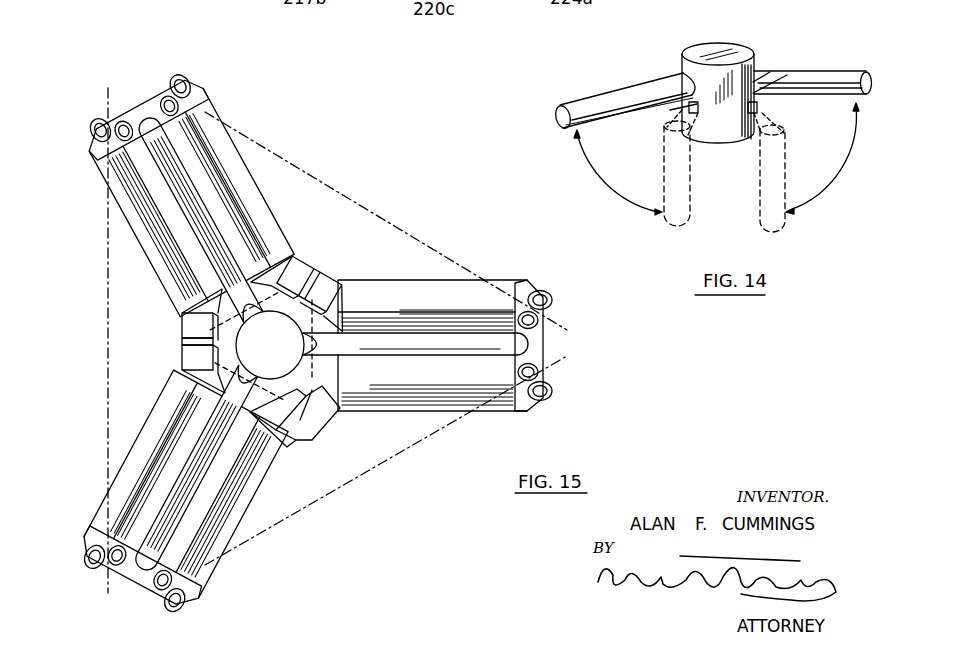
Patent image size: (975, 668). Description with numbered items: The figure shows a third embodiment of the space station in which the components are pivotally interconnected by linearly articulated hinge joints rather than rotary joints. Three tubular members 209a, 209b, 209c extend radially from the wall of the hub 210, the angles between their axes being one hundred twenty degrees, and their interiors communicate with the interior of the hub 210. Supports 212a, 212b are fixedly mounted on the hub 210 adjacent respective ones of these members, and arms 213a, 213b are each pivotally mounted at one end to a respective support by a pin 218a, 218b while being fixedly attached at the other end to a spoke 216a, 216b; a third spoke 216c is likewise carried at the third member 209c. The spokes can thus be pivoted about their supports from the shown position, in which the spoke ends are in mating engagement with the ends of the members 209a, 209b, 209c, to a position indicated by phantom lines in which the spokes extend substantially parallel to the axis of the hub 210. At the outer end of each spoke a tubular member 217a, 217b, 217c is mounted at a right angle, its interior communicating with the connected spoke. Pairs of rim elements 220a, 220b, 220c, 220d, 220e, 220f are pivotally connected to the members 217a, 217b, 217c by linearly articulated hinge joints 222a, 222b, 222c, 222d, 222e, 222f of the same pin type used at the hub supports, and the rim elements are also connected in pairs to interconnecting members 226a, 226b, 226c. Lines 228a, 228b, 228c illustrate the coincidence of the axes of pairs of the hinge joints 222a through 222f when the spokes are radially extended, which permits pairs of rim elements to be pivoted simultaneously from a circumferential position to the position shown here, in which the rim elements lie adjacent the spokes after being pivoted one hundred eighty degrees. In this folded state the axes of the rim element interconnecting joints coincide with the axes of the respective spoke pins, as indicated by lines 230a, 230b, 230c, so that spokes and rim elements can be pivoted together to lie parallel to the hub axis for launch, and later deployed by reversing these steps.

In FIG. 15, the hub 210 is at (270, 345).
In FIG. 14, the hub 210 is at (714, 36).
In FIG. 15, the tubular member 209a is at (335, 328).
In FIG. 14, the tubular member 209a is at (767, 72).
In FIG. 15, the tubular member 209b is at (273, 440).
In FIG. 14, the tubular member 209b is at (683, 77).
In FIG. 15, the tubular member 209c is at (235, 298).
In FIG. 15, the spoke 216a is at (360, 352).
In FIG. 14, the spoke 216a is at (808, 72).
In FIG. 15, the spoke 216b is at (207, 443).
In FIG. 14, the spoke 216b is at (590, 103).
In FIG. 15, the spoke 216c is at (158, 137).
In FIG. 14, the support 212a is at (755, 114).
In FIG. 14, the support 212b is at (697, 116).
In FIG. 14, the arm 213a is at (758, 107).
In FIG. 14, the arm 213b is at (677, 107).
In FIG. 14, the pin 218a is at (758, 112).
In FIG. 14, the pin 218b is at (698, 113).
In FIG. 15, the rim element 220a is at (510, 283).
In FIG. 15, the rim element 220b is at (515, 402).
In FIG. 15, the rim element 220c is at (237, 500).
In FIG. 15, the rim element 220d is at (103, 503).
In FIG. 15, the rim element 220e is at (97, 162).
In FIG. 15, the rim element 220f is at (240, 210).
In FIG. 15, the hinge joint 222a is at (541, 303).
In FIG. 15, the hinge joint 222b is at (552, 396).
In FIG. 15, the hinge joint 222c is at (200, 590).
In FIG. 15, the hinge joint 222d is at (92, 532).
In FIG. 15, the hinge joint 222e is at (100, 113).
In FIG. 15, the hinge joint 222f is at (167, 72).
In FIG. 15, the tubular member 217a is at (545, 346).
In FIG. 15, the tubular member 217b is at (152, 588).
In FIG. 15, the tubular member 217c is at (137, 107).
In FIG. 15, the interconnecting member 226a is at (297, 262).
In FIG. 15, the interconnecting member 226b is at (337, 412).
In FIG. 15, the interconnecting member 226c is at (182, 347).
In FIG. 15, the line 230a is at (340, 417).
In FIG. 15, the line 230b is at (182, 372).
In FIG. 15, the line 230c is at (182, 316).
In FIG. 15, the line 228a is at (398, 222).
In FIG. 15, the line 228b is at (307, 533).
In FIG. 15, the line 228c is at (106, 338).